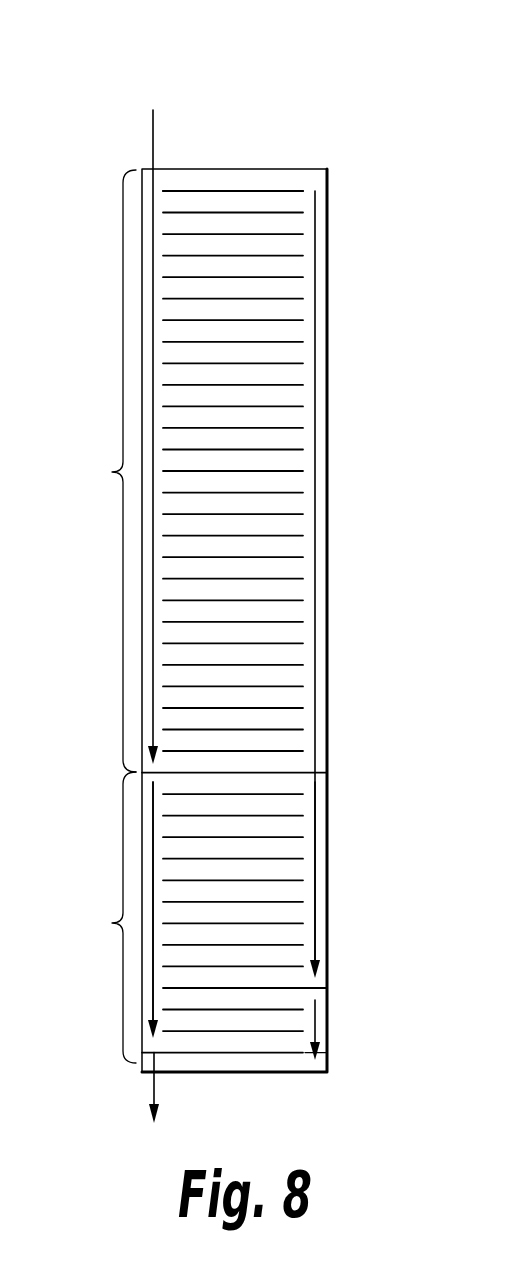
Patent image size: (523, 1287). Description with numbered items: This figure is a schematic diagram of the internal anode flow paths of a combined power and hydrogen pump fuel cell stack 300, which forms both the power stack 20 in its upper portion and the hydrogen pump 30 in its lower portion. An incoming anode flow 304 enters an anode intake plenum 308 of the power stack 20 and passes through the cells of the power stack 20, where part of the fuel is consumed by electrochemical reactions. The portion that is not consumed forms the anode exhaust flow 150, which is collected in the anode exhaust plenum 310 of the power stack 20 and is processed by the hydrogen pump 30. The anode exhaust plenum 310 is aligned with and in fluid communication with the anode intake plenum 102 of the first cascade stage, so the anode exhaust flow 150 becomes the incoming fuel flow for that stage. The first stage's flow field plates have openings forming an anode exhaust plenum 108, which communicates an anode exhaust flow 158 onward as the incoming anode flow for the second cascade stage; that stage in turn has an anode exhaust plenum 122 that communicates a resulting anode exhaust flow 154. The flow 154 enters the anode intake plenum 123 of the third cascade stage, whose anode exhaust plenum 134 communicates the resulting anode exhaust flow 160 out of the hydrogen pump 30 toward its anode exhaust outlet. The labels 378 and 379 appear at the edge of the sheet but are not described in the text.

The stack 300 is at (327, 88).
The inlet conduit 378 is at (7, 101).
The outlet conduit 379 is at (15, 548).
The power stack 20 is at (190, 471).
The hydrogen pump 30 is at (191, 917).
The incoming anode flow 304 is at (153, 148).
The anode intake plenum 308 is at (160, 182).
The anode exhaust plenum 310 is at (320, 287).
The anode exhaust flow 150 is at (315, 793).
The anode exhaust plenum 108 is at (148, 831).
The anode exhaust flow 158 is at (153, 961).
The anode intake plenum 102 is at (318, 836).
The anode exhaust plenum 122 is at (318, 1010).
The anode exhaust flow 154 is at (317, 1023).
The anode intake plenum 123 is at (320, 1063).
The anode exhaust plenum 134 is at (145, 1062).
The anode exhaust flow 160 is at (154, 1092).